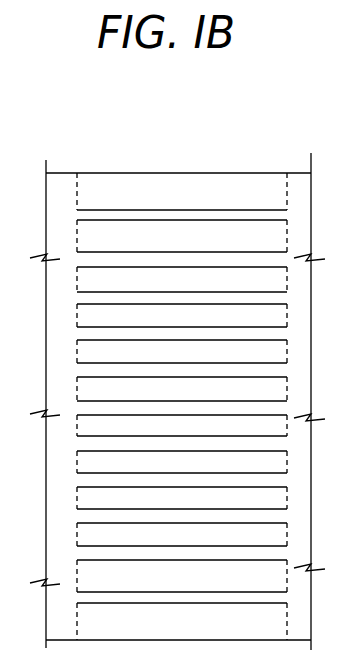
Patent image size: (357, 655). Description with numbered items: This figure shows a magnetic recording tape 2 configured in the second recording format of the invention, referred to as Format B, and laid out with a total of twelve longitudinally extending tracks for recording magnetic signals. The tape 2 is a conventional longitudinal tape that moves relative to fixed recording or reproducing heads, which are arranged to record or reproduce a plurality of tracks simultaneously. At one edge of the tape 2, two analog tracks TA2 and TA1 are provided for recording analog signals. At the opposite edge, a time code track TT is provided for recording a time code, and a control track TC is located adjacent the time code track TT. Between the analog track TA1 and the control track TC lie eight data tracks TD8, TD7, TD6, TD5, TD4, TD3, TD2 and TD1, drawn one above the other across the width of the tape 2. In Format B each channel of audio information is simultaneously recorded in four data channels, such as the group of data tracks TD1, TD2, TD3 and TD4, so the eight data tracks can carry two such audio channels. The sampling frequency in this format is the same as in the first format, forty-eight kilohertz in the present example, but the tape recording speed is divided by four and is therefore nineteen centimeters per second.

The tape 2 is at (264, 173).
The analog track TA2 is at (182, 191).
The analog track TA1 is at (182, 236).
The data track TD8 is at (182, 280).
The data track TD7 is at (182, 316).
The data track TD6 is at (182, 353).
The data track TD5 is at (182, 390).
The data track TD4 is at (182, 427).
The data track TD3 is at (182, 464).
The data track TD2 is at (182, 498).
The data track TD1 is at (182, 535).
The control track TC is at (182, 576).
The time code track TT is at (182, 621).